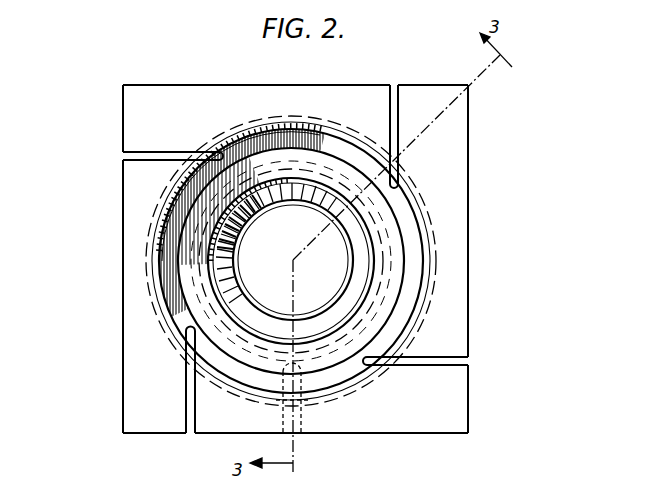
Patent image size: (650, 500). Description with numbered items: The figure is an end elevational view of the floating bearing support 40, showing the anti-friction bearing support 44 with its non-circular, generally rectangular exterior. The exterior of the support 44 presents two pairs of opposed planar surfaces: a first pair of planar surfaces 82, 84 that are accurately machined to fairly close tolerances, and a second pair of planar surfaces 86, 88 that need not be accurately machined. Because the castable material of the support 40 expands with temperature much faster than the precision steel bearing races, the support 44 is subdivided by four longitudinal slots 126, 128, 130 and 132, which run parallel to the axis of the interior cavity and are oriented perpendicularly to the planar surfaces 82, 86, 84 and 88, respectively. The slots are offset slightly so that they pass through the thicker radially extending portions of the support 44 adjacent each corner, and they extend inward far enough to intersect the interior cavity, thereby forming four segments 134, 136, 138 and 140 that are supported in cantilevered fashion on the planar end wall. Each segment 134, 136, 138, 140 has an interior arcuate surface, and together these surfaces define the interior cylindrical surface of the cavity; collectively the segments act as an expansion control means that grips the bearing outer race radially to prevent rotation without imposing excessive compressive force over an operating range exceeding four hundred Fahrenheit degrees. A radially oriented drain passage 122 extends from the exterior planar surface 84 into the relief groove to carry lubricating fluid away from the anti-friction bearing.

The floating bearing support 40 is at (354, 85).
The anti-friction bearing support 44 is at (190, 87).
The planar surface 82 is at (228, 86).
The planar surface 84 is at (374, 434).
The planar surface 86 is at (468, 279).
The planar surface 88 is at (122, 263).
The drain passage 122 is at (270, 420).
The longitudinal slot 126 is at (398, 88).
The longitudinal slot 128 is at (463, 362).
The longitudinal slot 130 is at (188, 424).
The longitudinal slot 132 is at (122, 155).
The segment 134 is at (297, 86).
The segment 136 is at (466, 200).
The segment 138 is at (417, 424).
The segment 140 is at (123, 342).